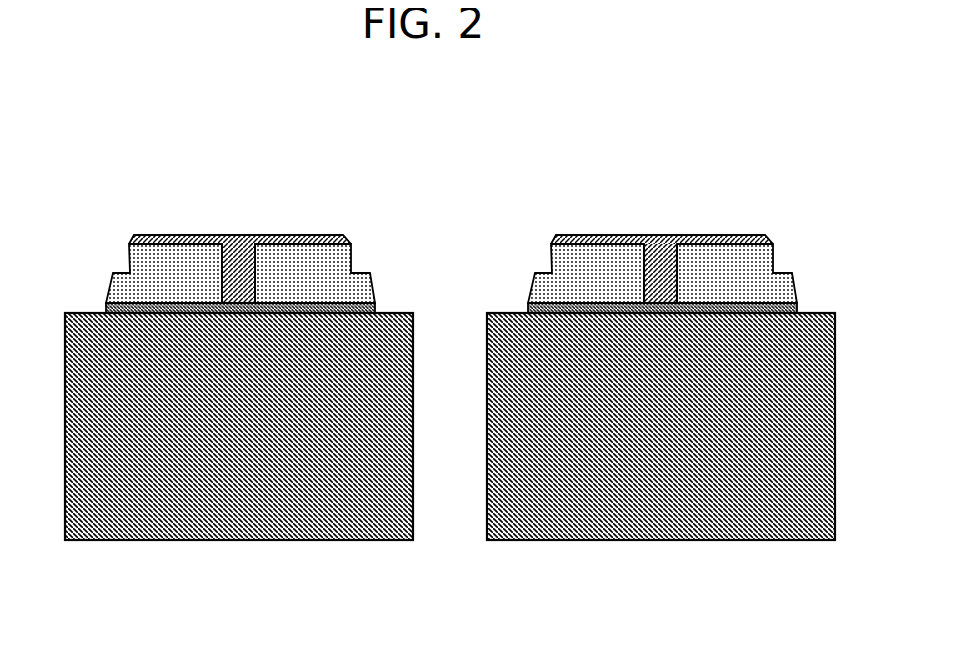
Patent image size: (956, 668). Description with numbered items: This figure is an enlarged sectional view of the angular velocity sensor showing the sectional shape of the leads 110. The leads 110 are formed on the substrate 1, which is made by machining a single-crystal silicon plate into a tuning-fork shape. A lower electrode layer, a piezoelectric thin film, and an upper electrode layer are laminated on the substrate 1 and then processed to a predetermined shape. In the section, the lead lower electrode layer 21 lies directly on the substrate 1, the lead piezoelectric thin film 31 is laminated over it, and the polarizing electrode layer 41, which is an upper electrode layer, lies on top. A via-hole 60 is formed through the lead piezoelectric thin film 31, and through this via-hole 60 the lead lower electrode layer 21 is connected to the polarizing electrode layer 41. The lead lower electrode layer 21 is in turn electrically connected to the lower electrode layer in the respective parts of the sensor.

The substrate 1 is at (65, 405).
The lead lower electrode layer 21 is at (308, 297).
The lead piezoelectric thin film 31 is at (277, 260).
The polarizing electrode layer 41 is at (160, 233).
The via-hole 60 is at (227, 250).
The leads 110 is at (140, 167).